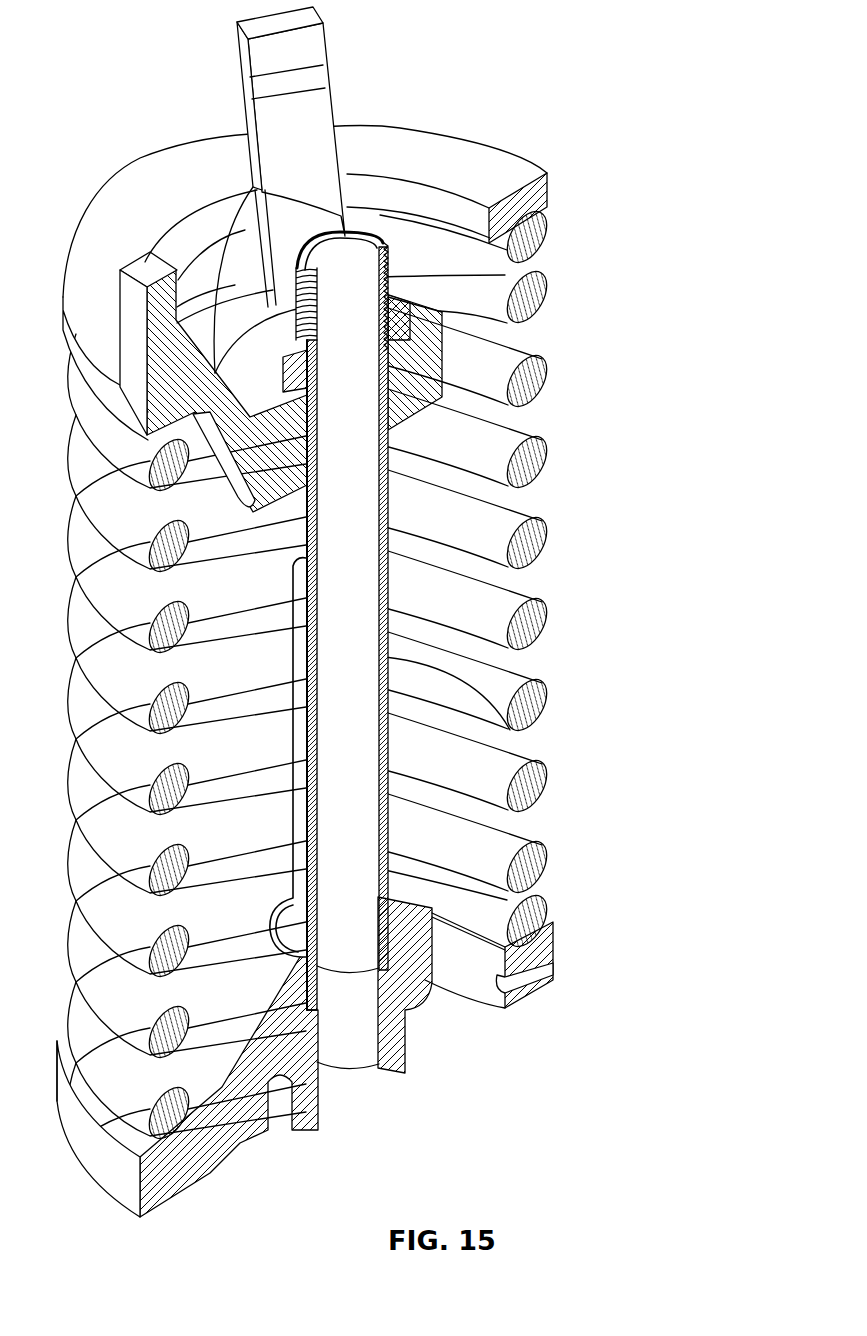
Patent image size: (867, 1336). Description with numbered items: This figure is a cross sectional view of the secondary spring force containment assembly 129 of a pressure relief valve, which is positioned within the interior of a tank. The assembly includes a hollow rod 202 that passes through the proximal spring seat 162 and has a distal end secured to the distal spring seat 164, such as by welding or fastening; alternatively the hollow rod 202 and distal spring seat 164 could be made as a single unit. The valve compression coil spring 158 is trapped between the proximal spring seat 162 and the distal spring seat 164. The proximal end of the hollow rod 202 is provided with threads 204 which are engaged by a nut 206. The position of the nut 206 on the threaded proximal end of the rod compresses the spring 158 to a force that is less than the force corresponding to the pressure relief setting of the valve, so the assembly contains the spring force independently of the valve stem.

The secondary spring force containment assembly 129 is at (415, 621).
The valve compression coil spring 158 is at (541, 452).
The proximal spring seat 162 is at (510, 167).
The distal spring seat 164 is at (188, 1195).
The hollow rod 202 is at (508, 729).
The threads 204 is at (253, 187).
The nut 206 is at (182, 203).